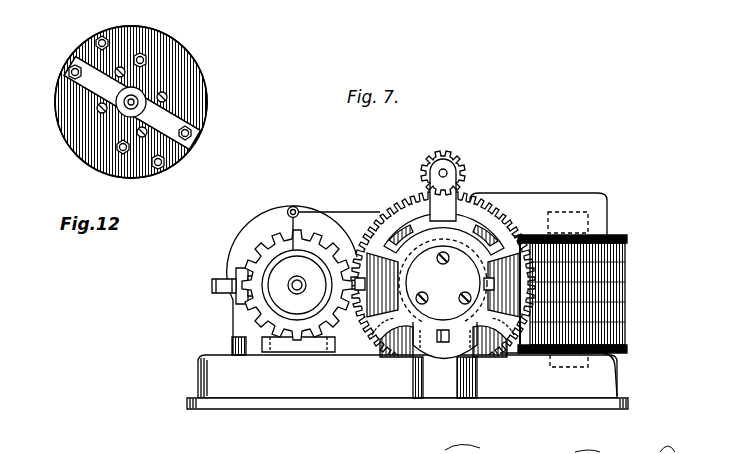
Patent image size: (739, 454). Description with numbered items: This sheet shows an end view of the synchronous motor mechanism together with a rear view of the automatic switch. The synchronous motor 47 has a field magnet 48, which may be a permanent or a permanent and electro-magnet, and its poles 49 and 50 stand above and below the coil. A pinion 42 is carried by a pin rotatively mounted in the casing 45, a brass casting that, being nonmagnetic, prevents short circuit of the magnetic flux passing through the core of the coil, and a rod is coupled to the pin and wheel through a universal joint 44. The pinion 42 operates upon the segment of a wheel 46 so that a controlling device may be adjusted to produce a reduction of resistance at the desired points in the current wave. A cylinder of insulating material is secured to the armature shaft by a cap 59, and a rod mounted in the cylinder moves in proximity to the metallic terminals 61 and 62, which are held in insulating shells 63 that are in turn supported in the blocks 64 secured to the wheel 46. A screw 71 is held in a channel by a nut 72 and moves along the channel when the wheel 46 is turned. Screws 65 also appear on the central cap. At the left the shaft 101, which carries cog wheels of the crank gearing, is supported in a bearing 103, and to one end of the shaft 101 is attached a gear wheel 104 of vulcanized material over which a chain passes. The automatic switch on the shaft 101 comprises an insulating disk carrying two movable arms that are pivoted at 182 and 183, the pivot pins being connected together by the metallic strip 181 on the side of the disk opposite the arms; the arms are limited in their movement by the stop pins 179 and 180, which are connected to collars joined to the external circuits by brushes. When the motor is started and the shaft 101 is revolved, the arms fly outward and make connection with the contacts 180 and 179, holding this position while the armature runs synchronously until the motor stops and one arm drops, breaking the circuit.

In FIG. 12, the stop pin 179 is at (160, 170).
In FIG. 12, the stop pin 180 is at (98, 40).
In FIG. 12, the metallic strip 181 is at (172, 118).
In FIG. 12, the pivot 182 is at (69, 72).
In FIG. 12, the pivot 183 is at (191, 136).
In FIG. 7, the pinion 42 is at (464, 168).
In FIG. 7, the universal joint 44 is at (612, 373).
In FIG. 7, the casing 45 is at (432, 167).
In FIG. 7, the wheel 46 is at (392, 214).
In FIG. 7, the synchronous motor 47 is at (600, 294).
In FIG. 7, the field magnet 48 is at (627, 293).
In FIG. 7, the pole 49 is at (558, 204).
In FIG. 7, the pole 50 is at (495, 352).
In FIG. 7, the cap 59 is at (443, 283).
In FIG. 7, the terminal 61 is at (361, 370).
In FIG. 7, the terminal 62 is at (485, 241).
In FIG. 7, the insulating shell 63 is at (540, 279).
In FIG. 7, the block 64 is at (378, 327).
In FIG. 7, the screw 65 is at (441, 263).
In FIG. 7, the screw 71 is at (462, 353).
In FIG. 7, the nut 72 is at (420, 352).
In FIG. 7, the shaft 101 is at (290, 288).
In FIG. 7, the bearing 103 is at (328, 218).
In FIG. 7, the gear wheel 104 is at (244, 264).